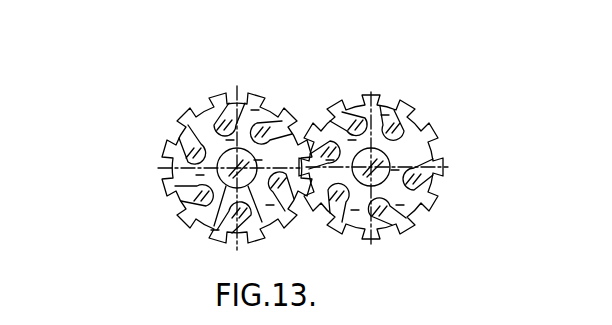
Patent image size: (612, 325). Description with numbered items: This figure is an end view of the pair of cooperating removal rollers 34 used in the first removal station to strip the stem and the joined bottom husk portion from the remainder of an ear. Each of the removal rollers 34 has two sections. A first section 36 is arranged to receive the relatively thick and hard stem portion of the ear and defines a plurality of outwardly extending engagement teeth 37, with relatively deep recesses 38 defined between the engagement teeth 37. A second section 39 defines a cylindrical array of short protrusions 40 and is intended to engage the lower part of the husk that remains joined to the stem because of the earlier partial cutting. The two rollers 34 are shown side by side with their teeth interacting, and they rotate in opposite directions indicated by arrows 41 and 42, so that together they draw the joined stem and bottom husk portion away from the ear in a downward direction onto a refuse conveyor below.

The removal rollers 34 is at (122, 78).
The first section 36 is at (215, 217).
The engagement teeth 37 is at (187, 128).
The recesses 38 is at (192, 152).
The second section 39 is at (330, 103).
The short protrusions 40 is at (435, 198).
The arrow 41 is at (270, 52).
The arrow 42 is at (391, 26).